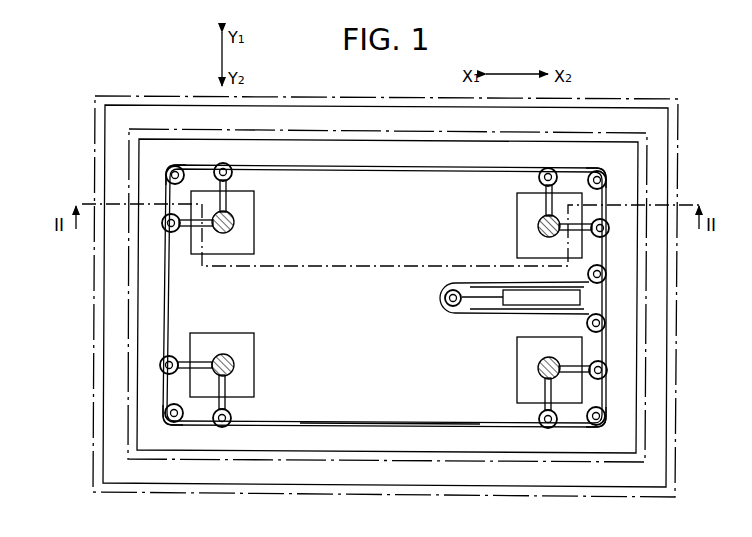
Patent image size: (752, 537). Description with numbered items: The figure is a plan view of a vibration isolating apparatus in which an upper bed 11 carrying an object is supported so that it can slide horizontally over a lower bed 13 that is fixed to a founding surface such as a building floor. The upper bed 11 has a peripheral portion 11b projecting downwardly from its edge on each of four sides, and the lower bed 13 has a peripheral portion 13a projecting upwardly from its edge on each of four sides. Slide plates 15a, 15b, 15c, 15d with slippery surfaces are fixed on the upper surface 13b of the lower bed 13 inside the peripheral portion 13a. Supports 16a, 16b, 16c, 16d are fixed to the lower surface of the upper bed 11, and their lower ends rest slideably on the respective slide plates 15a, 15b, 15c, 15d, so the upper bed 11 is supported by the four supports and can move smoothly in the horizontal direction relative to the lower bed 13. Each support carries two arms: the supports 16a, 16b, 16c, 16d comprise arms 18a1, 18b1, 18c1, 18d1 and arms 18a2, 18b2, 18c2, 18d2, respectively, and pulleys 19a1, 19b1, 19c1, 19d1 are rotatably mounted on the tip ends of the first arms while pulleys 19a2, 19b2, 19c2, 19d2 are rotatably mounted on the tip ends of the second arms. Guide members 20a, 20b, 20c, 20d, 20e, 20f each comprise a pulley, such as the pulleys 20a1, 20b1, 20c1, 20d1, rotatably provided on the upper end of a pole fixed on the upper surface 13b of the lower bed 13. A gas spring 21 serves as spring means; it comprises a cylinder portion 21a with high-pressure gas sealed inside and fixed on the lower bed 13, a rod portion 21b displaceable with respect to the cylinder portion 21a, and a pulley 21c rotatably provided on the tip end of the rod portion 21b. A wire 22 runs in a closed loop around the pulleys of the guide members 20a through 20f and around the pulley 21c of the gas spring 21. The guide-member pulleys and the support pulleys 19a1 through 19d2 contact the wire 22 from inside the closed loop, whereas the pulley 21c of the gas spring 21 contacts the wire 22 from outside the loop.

The upper bed 11 is at (458, 497).
The peripheral portion 11b is at (230, 490).
The lower bed 13 is at (323, 443).
The peripheral portion 13a is at (407, 458).
The upper surface 13b is at (387, 410).
The slide plate 15a is at (249, 244).
The slide plate 15b is at (518, 248).
The slide plate 15c is at (247, 349).
The slide plate 15d is at (519, 368).
The support 16a is at (235, 223).
The support 16b is at (538, 227).
The support 16c is at (222, 355).
The support 16d is at (549, 357).
The arm 18a1 is at (227, 198).
The arm 18a2 is at (183, 227).
The arm 18b1 is at (543, 204).
The arm 18b2 is at (585, 236).
The arm 18c1 is at (232, 387).
The arm 18c2 is at (198, 358).
The arm 18d1 is at (543, 390).
The arm 18d2 is at (583, 378).
The pulley 19a1 is at (223, 163).
The pulley 19a2 is at (163, 224).
The pulley 19b1 is at (548, 168).
The pulley 19b2 is at (610, 231).
The pulley 19c1 is at (232, 415).
The pulley 19c2 is at (160, 365).
The pulley 19d1 is at (548, 429).
The pulley 19d2 is at (608, 369).
The guide member 20a is at (174, 160).
The pulley 20a1 is at (166, 175).
The guide member 20b is at (597, 165).
The pulley 20b1 is at (607, 178).
The guide member 20c is at (174, 428).
The pulley 20c1 is at (164, 413).
The guide member 20d is at (598, 428).
The pulley 20d1 is at (606, 419).
The guide member 20e is at (606, 322).
The guide member 20f is at (608, 290).
The gas spring 21 is at (472, 283).
The cylinder portion 21a is at (510, 304).
The rod portion 21b is at (483, 301).
The pulley 21c is at (444, 296).
The wire 22 is at (380, 170).